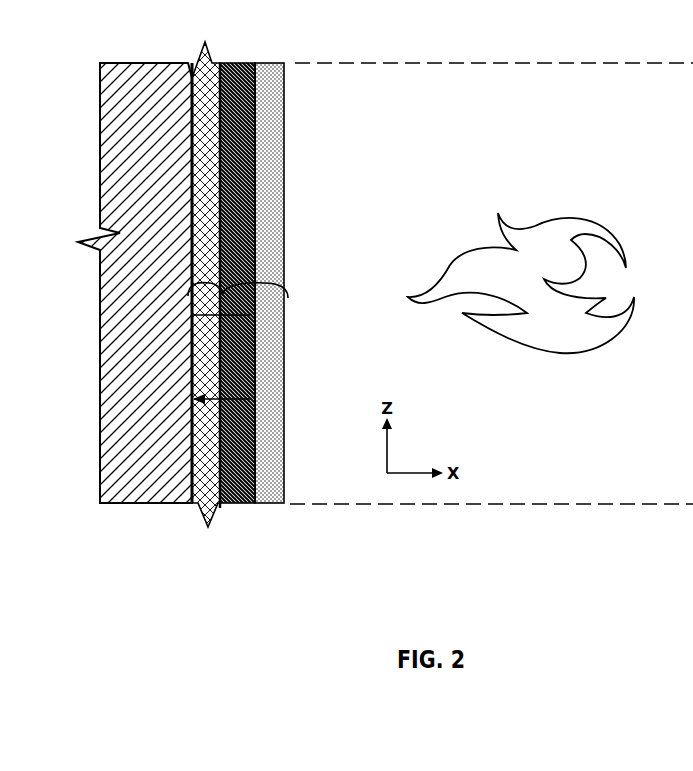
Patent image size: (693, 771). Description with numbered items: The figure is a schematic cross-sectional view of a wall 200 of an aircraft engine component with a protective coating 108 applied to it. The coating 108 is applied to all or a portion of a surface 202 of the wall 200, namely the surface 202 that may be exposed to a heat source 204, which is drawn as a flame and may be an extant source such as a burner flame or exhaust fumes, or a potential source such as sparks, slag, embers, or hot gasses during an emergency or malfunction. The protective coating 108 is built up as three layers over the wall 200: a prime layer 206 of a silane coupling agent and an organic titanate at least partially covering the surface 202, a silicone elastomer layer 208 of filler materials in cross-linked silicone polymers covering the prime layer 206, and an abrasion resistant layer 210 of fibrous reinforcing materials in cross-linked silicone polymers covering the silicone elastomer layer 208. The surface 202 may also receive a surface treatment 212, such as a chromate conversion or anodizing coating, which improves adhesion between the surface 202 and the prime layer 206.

The wall 200 is at (160, 291).
The protective coating 108 is at (225, 284).
The prime layer 206 is at (203, 181).
The silicone elastomer layer 208 is at (234, 188).
The abrasion resistant layer 210 is at (266, 206).
The surface 202 is at (250, 315).
The surface treatment 212 is at (250, 399).
The heat source 204 is at (525, 287).